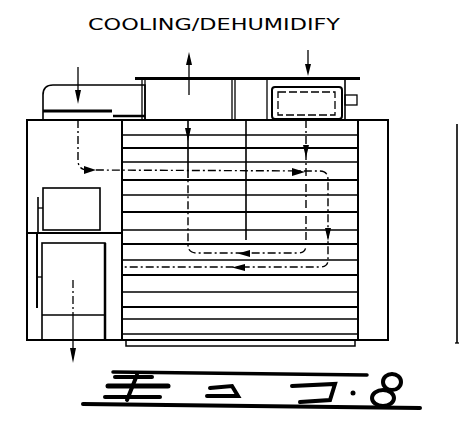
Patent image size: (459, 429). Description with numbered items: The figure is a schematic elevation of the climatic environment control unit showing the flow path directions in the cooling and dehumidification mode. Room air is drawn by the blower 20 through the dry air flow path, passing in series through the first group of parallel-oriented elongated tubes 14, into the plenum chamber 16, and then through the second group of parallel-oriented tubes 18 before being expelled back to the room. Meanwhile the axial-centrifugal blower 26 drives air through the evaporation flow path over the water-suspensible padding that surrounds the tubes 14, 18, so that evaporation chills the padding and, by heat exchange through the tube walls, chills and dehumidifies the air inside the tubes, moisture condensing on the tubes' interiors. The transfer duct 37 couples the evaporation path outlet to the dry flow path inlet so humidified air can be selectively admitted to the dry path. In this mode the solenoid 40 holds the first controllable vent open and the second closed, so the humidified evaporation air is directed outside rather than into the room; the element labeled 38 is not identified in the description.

The first group of parallel-oriented elongated tubes 14 is at (350, 178).
The plenum chamber 16 is at (373, 236).
The second group of parallel-oriented tubes 18 is at (345, 300).
The blower 20 is at (122, 265).
The blower 26 is at (337, 77).
The transfer duct 37 is at (62, 93).
The filter 38 is at (335, 112).
The solenoid 40 is at (357, 97).